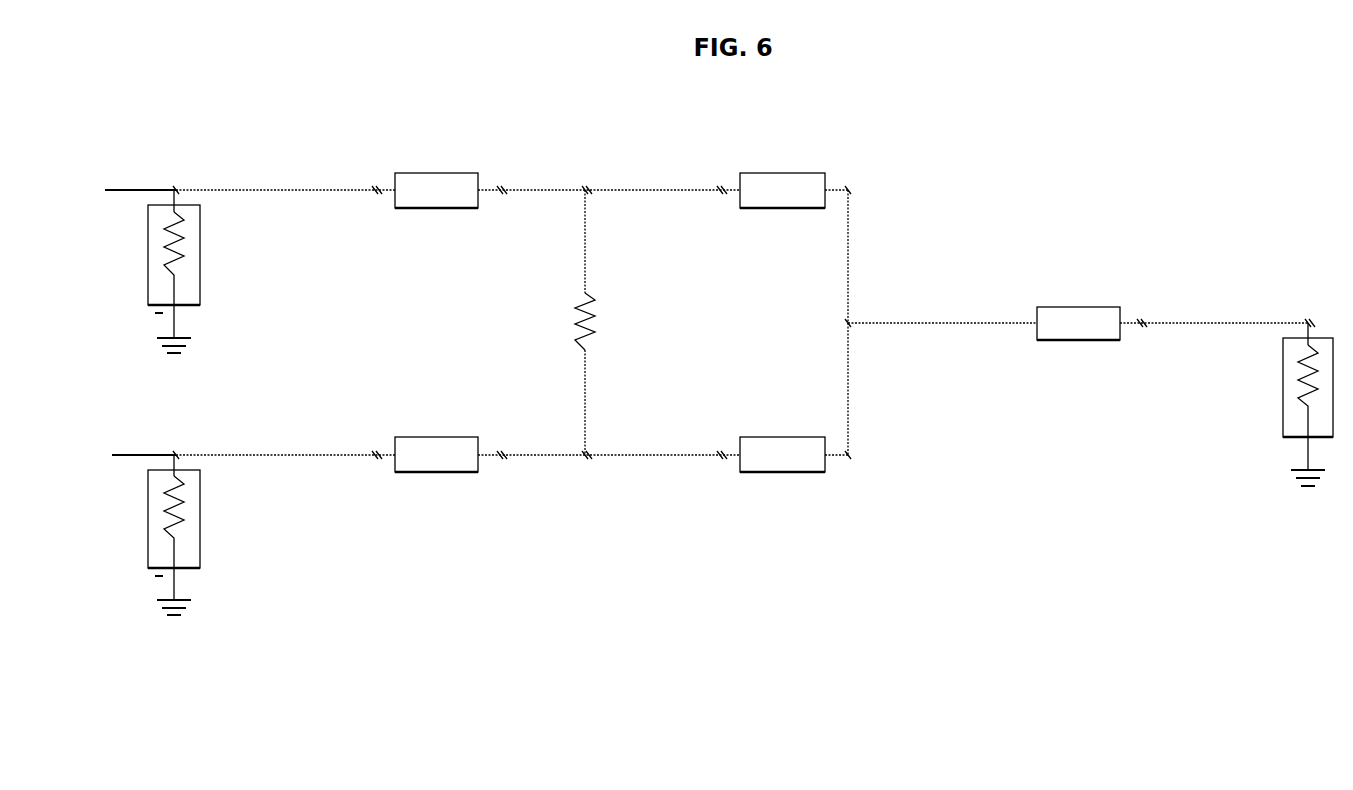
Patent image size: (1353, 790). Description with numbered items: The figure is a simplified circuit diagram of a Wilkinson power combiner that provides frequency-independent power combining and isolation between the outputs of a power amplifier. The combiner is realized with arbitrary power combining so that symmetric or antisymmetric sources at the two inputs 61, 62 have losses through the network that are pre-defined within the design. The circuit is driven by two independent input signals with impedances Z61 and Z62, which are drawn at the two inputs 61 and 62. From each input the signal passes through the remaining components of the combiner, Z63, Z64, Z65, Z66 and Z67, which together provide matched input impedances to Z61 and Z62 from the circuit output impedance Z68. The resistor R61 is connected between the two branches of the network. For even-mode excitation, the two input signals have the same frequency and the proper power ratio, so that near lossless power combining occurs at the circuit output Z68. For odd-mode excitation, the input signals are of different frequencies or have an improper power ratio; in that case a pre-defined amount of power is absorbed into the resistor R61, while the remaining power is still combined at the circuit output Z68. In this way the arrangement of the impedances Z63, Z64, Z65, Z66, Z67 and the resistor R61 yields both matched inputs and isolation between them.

The input 61 is at (136, 172).
The input 62 is at (136, 434).
The input signal impedance Z61 is at (203, 271).
The input signal impedance Z62 is at (203, 535).
The combiner component Z63 is at (436, 213).
The combiner component Z64 is at (436, 478).
The combiner component Z65 is at (782, 213).
The combiner component Z66 is at (782, 478).
The combiner component Z67 is at (1078, 347).
The circuit output impedance Z68 is at (1277, 404).
The resistor R61 is at (618, 322).